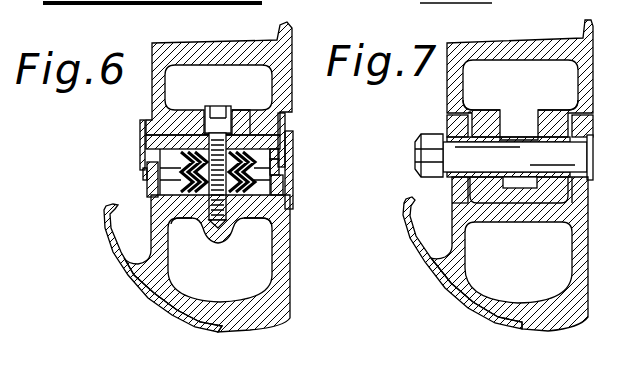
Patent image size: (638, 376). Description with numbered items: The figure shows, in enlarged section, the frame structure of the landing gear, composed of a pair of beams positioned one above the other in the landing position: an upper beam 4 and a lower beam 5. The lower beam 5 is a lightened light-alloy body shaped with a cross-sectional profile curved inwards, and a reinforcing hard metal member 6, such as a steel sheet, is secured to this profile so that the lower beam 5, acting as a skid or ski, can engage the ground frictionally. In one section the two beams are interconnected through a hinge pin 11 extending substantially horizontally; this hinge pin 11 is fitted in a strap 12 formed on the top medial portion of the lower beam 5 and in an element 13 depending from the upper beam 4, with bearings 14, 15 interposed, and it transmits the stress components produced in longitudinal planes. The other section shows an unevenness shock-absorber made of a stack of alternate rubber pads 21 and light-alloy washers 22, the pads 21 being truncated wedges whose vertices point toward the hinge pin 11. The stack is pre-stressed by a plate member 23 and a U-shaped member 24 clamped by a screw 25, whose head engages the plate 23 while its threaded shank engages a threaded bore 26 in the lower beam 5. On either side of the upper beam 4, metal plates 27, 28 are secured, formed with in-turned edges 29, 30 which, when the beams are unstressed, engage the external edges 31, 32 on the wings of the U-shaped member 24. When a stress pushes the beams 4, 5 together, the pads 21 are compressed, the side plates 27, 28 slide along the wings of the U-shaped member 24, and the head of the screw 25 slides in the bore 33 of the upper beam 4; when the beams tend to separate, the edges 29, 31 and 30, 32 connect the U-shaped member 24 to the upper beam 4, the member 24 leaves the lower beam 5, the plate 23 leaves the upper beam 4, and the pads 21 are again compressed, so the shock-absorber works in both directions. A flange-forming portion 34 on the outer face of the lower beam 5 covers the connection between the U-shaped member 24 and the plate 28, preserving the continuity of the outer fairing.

In FIG. 6, the upper beam 4 is at (283, 60).
In FIG. 7, the upper beam 4 is at (587, 51).
In FIG. 6, the lower beam 5 is at (281, 251).
In FIG. 7, the lower beam 5 is at (583, 234).
In FIG. 6, the reinforcing hard metal member 6 is at (150, 304).
In FIG. 7, the reinforcing hard metal member 6 is at (466, 318).
In FIG. 7, the hinge pin 11 is at (577, 158).
In FIG. 7, the strap 12 is at (447, 121).
In FIG. 7, the element 13 is at (495, 110).
In FIG. 7, the bearing 14 is at (458, 180).
In FIG. 7, the bearing 15 is at (490, 180).
In FIG. 6, the rubber discs or pads 21 is at (178, 152).
In FIG. 6, the light-alloy washers 22 is at (285, 197).
In FIG. 6, the plate member 23 is at (294, 134).
In FIG. 6, the U-shaped member 24 is at (172, 222).
In FIG. 6, the screw 25 is at (243, 133).
In FIG. 6, the threaded bore 26 is at (237, 222).
In FIG. 6, the metal plate 27 is at (140, 130).
In FIG. 6, the metal plate 28 is at (286, 121).
In FIG. 6, the in-turned edge 29 is at (151, 172).
In FIG. 6, the in-turned edge 30 is at (281, 183).
In FIG. 6, the external edge 31 is at (145, 168).
In FIG. 6, the external edge 32 is at (280, 163).
In FIG. 6, the bore 33 is at (218, 112).
In FIG. 6, the flange-forming portion 34 is at (288, 153).